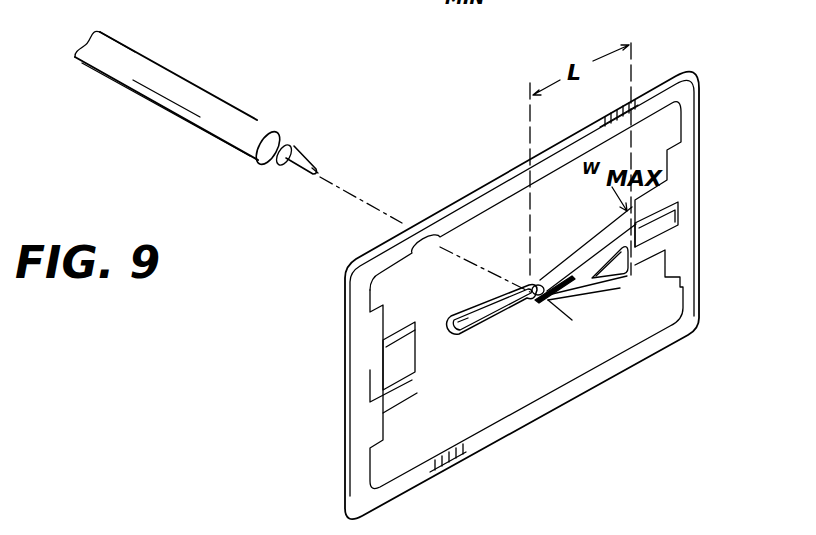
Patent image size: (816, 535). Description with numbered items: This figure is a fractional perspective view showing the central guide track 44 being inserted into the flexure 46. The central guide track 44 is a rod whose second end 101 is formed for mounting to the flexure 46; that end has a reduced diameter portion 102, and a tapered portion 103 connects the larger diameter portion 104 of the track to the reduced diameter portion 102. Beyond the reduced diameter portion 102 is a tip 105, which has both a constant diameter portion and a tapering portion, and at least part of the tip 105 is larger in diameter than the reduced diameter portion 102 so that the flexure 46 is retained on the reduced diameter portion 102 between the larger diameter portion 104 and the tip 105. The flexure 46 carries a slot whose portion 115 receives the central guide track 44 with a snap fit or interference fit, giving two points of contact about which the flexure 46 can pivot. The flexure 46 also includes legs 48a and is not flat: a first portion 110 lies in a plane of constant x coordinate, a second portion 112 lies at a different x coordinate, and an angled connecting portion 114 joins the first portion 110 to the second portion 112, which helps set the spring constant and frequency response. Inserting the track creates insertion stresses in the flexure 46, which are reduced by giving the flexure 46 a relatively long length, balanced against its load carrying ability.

The central guide track 44 is at (160, 100).
The flexure 46 is at (707, 95).
The legs 48a is at (615, 231).
The second end 101 is at (301, 148).
The reduced diameter portion 102 is at (283, 143).
The tapered portion 103 is at (262, 136).
The larger diameter portion 104 is at (138, 62).
The tip 105 is at (296, 165).
The first portion 110 is at (512, 315).
The second portion 112 is at (413, 327).
The connecting portion 114 is at (490, 330).
The portion of the slot 115 is at (550, 297).